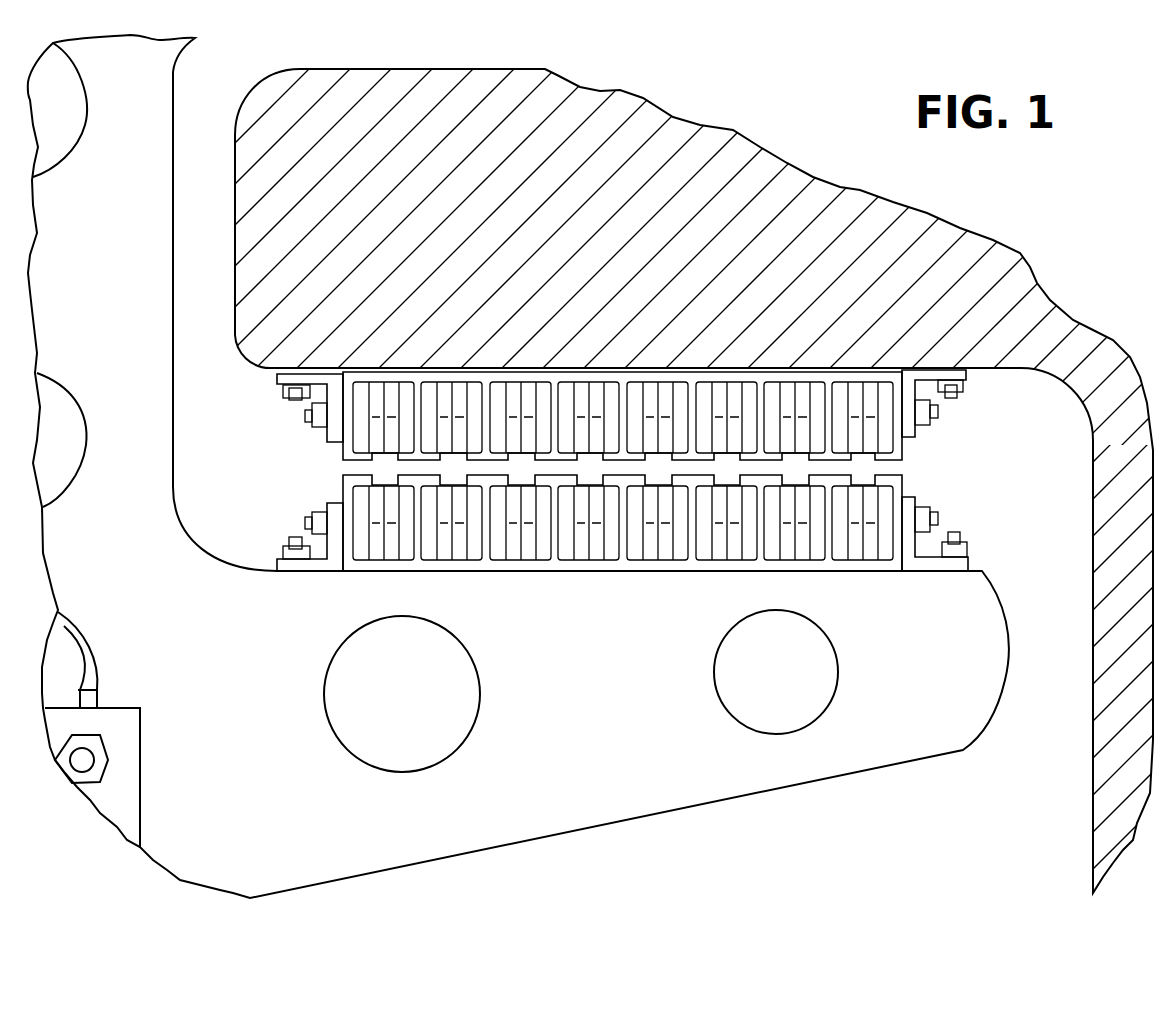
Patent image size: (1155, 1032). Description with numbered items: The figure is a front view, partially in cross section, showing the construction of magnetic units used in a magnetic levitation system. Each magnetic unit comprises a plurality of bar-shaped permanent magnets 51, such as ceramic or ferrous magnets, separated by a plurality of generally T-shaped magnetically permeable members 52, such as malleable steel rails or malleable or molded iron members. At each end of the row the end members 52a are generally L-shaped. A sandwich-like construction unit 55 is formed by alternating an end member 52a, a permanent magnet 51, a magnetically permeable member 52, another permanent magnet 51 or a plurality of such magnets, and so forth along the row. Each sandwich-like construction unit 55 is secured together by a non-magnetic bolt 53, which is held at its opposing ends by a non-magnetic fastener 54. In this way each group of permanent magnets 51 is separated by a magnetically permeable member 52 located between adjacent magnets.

The permanent magnet 51 is at (357, 438).
The magnetically permeable member 52 is at (400, 422).
The end member 52a is at (283, 393).
The non-magnetic bolt 53 is at (307, 412).
The non-magnetic fastener 54 is at (314, 427).
The sandwich-like construction unit 55 is at (376, 380).